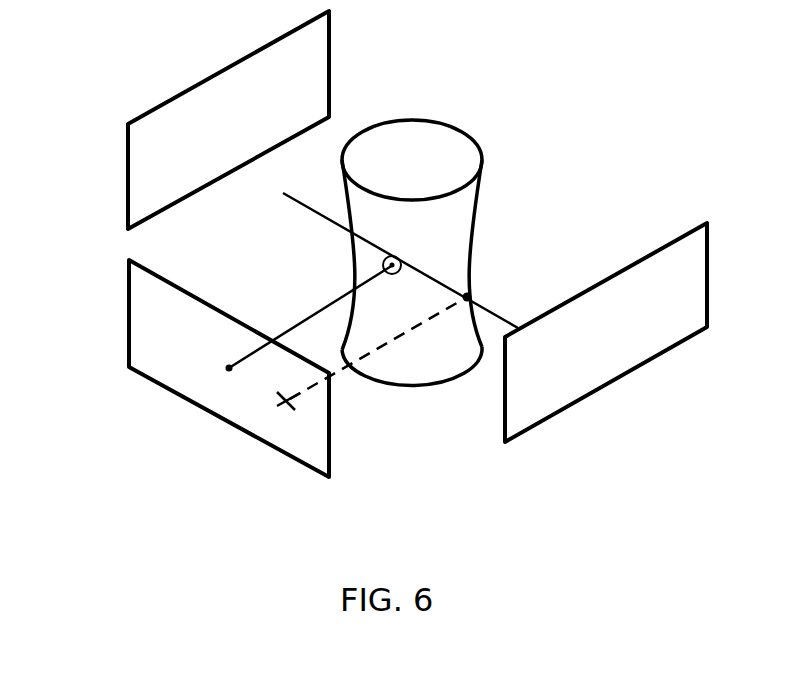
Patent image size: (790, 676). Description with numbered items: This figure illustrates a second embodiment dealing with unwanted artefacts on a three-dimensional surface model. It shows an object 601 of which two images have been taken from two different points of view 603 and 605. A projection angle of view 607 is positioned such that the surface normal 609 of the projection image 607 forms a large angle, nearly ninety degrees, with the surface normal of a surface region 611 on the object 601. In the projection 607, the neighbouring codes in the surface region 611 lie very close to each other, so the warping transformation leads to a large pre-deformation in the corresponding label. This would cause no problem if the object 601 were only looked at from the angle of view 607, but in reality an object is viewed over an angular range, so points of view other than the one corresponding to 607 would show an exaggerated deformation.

The object 601 is at (417, 120).
The point of view 603 is at (128, 175).
The point of view 605 is at (613, 382).
The projection angle of view 607 is at (141, 377).
The surface normal 609 is at (308, 323).
The surface region 611 is at (470, 293).